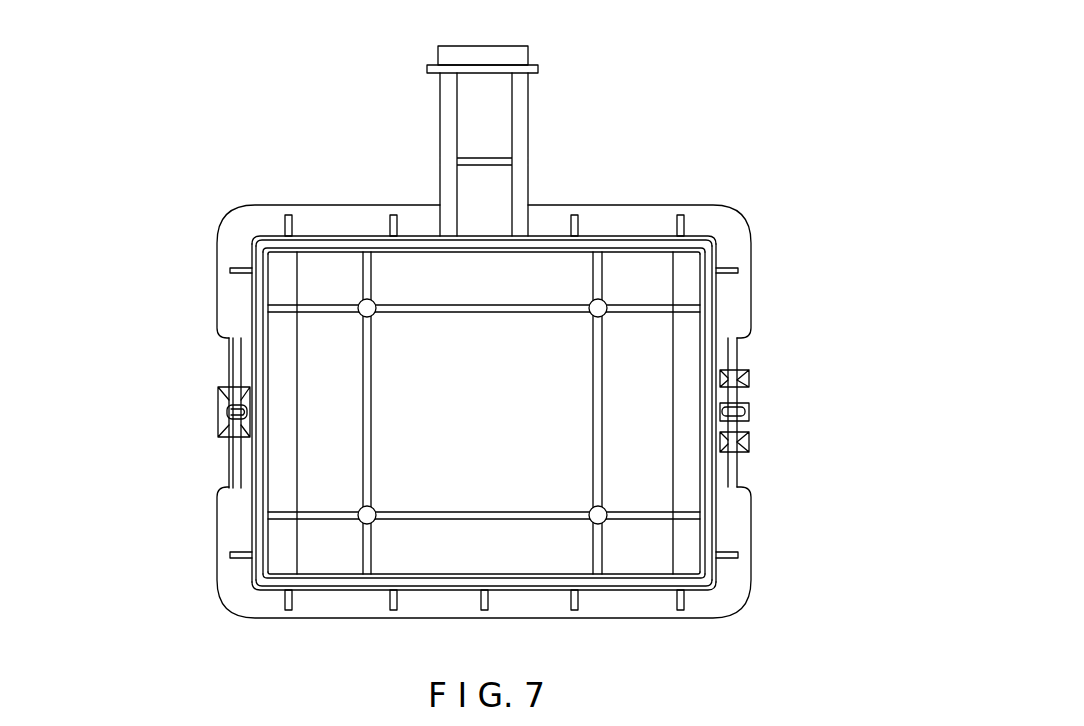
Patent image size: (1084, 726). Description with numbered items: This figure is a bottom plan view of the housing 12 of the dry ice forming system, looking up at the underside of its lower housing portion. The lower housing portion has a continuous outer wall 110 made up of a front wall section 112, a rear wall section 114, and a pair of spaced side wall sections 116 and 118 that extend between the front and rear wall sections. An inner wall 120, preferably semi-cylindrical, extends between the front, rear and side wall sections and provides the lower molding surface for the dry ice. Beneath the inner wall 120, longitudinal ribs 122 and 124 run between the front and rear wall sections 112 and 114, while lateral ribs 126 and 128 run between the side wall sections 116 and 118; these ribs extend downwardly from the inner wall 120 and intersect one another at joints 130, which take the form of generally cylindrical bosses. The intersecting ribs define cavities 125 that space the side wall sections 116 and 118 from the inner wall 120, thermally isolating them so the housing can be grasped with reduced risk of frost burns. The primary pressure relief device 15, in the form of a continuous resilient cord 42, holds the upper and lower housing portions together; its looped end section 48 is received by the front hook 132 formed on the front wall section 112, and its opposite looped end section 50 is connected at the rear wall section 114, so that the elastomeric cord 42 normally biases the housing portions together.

The housing 12 is at (752, 188).
The primary pressure relief device 15 is at (208, 360).
The continuous resilient cord 42 is at (738, 358).
The looped end section 48 is at (235, 473).
The looped end section 50 is at (738, 465).
The continuous outer wall 110 is at (752, 530).
The front wall section 112 is at (262, 543).
The rear wall section 114 is at (710, 283).
The side wall section 116 is at (343, 244).
The side wall section 118 is at (322, 585).
The inner wall 120 is at (558, 338).
The longitudinal rib 122 is at (460, 312).
The longitudinal rib 124 is at (490, 512).
The cavities 125 is at (348, 294).
The lateral rib 126 is at (372, 433).
The lateral rib 128 is at (597, 387).
The joints 130 is at (362, 317).
The front hook 132 is at (218, 410).